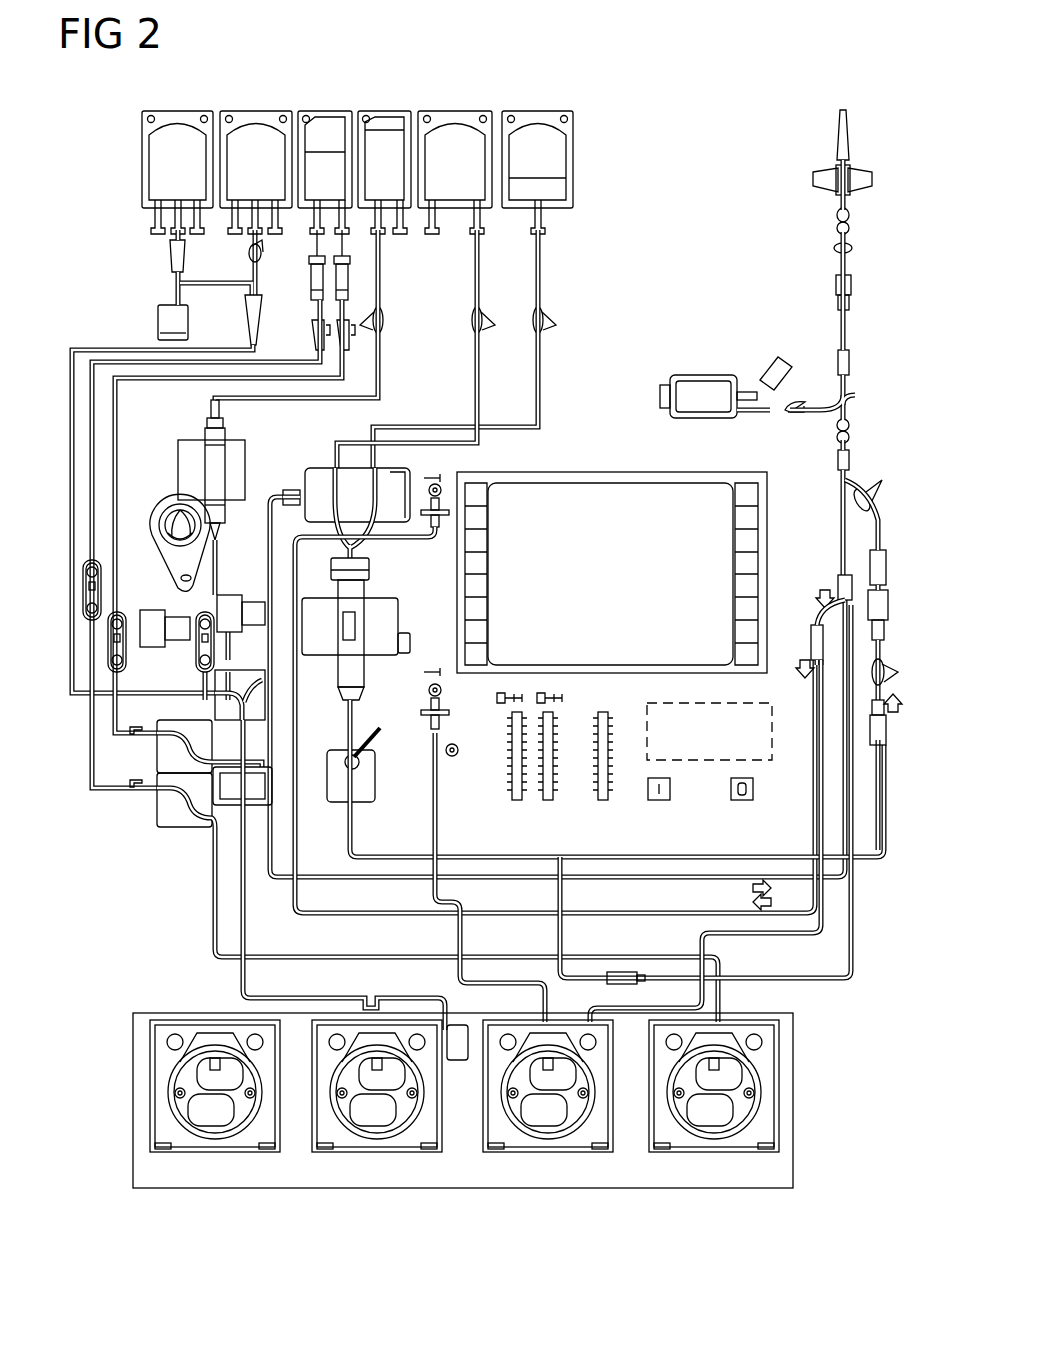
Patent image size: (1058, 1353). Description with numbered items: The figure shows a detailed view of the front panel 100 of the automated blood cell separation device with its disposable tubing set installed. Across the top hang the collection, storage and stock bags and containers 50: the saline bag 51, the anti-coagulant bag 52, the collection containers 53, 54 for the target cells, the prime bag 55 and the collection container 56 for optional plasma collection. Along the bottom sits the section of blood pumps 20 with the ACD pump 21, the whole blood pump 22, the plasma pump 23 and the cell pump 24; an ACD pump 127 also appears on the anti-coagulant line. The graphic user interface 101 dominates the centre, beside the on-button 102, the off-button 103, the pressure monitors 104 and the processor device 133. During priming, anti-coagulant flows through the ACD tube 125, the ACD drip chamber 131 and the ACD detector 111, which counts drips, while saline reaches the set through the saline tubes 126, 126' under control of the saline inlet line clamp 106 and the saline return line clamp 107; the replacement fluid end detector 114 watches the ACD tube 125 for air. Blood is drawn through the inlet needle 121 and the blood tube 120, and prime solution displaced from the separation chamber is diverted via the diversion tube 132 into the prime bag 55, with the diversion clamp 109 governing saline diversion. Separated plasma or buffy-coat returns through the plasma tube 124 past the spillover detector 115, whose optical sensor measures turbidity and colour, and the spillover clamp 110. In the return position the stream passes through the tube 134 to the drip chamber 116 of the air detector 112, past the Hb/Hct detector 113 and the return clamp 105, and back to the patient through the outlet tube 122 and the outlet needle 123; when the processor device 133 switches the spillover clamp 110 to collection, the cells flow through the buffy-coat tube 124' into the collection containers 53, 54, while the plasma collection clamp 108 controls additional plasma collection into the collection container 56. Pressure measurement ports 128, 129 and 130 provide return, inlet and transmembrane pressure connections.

The front panel 100 is at (694, 80).
The collection/storage/stock bags and containers 50 is at (592, 147).
The saline bag 51 is at (322, 110).
The anti-coagulant bag 52 is at (385, 110).
The collection container 53 is at (184, 110).
The collection container 54 is at (248, 110).
The prime bag 55 is at (546, 110).
The collection container 56 is at (458, 110).
The section of blood pumps 20 is at (818, 1097).
The ACD pump 21 is at (767, 1140).
The whole blood pump 22 is at (600, 1140).
The plasma pump 23 is at (427, 1140).
The cell pump 24 is at (262, 1140).
The graphic user interface 101 is at (718, 507).
The on-button 102 is at (660, 808).
The off-button 103 is at (746, 808).
The pressure monitors 104 is at (585, 790).
The return clamp 105 is at (370, 790).
The saline inlet line clamp 106 is at (178, 738).
The saline return line clamp 107 is at (160, 815).
The plasma collection clamp 108 is at (318, 460).
The diversion clamp 109 is at (398, 455).
The spillover clamp 110 is at (215, 690).
The ACD detector 111 is at (178, 450).
The air detector 112 is at (385, 622).
The Hb/Hct detector 113 is at (232, 594).
The replacement fluid end detector 114 is at (145, 617).
The spillover detector 115 is at (250, 795).
The drip chamber 116 is at (362, 582).
The blood tube 120 is at (832, 518).
The inlet needle 121 is at (860, 148).
The outlet tube to patient 122 is at (882, 690).
The outlet needle 123 is at (880, 540).
The plasma tube/buffy-coat tube 124 is at (292, 875).
The buffy-coat tube 124' is at (131, 519).
The ACD tube 125 is at (382, 283).
The saline tube 126 is at (477, 597).
The saline tube 126' is at (177, 516).
The ACD pump 127 is at (150, 525).
The pressure measurement port 128 is at (445, 475).
The pressure measurement port 129 is at (465, 683).
The pressure measurement port 130 is at (458, 770).
The ACD drip chamber 131 is at (200, 424).
The diversion tube 132 is at (542, 388).
The processor device 133 is at (750, 738).
The tube connecting the spillover detector and the drip chamber 134 is at (268, 525).